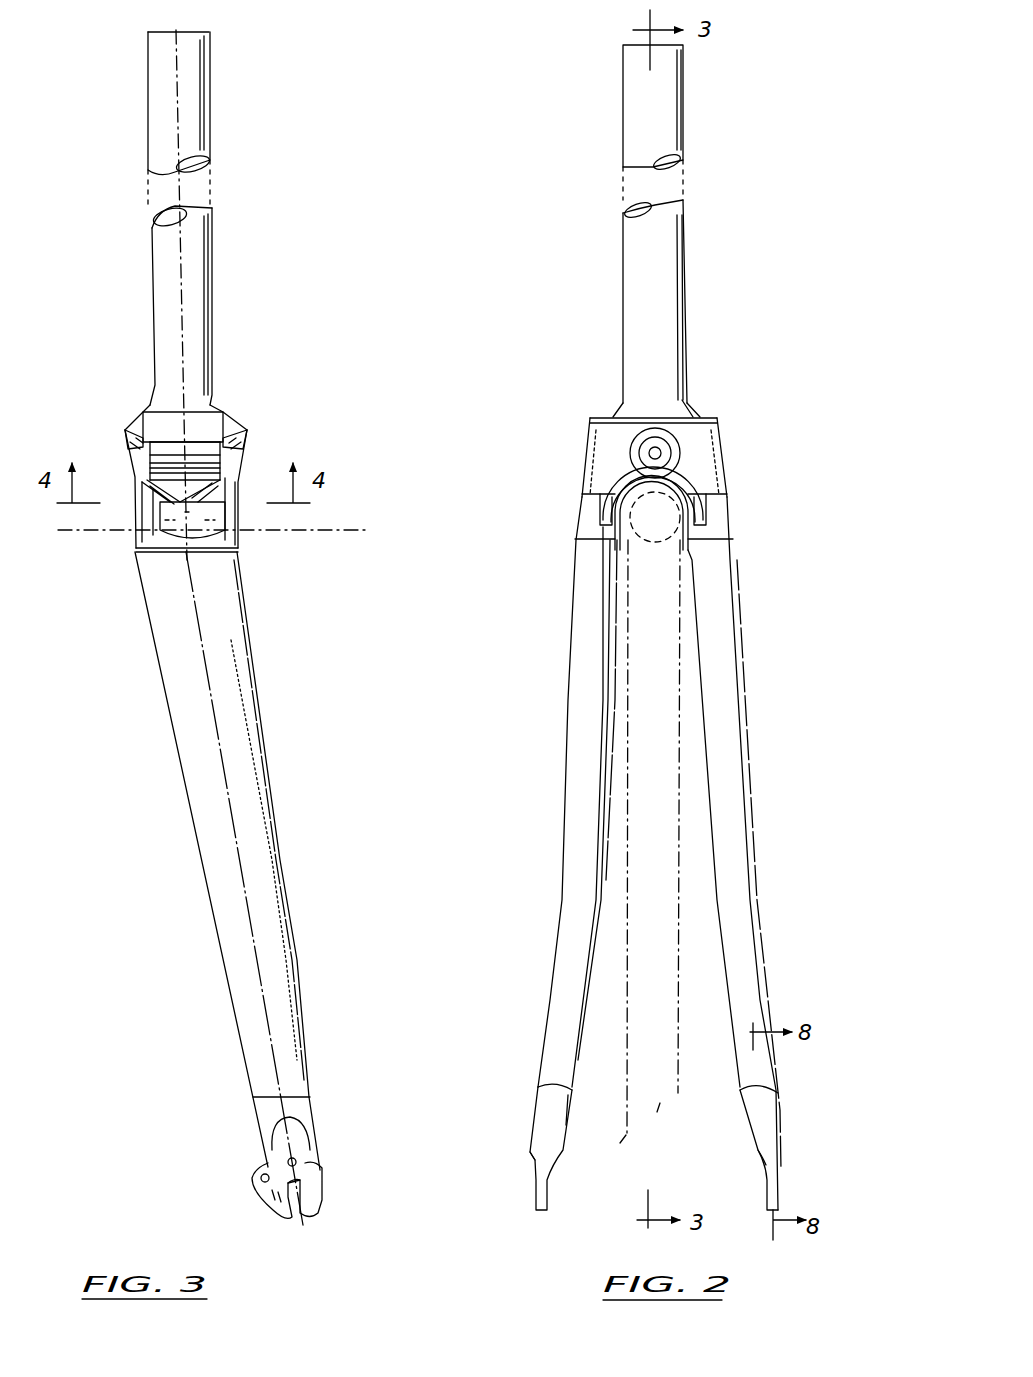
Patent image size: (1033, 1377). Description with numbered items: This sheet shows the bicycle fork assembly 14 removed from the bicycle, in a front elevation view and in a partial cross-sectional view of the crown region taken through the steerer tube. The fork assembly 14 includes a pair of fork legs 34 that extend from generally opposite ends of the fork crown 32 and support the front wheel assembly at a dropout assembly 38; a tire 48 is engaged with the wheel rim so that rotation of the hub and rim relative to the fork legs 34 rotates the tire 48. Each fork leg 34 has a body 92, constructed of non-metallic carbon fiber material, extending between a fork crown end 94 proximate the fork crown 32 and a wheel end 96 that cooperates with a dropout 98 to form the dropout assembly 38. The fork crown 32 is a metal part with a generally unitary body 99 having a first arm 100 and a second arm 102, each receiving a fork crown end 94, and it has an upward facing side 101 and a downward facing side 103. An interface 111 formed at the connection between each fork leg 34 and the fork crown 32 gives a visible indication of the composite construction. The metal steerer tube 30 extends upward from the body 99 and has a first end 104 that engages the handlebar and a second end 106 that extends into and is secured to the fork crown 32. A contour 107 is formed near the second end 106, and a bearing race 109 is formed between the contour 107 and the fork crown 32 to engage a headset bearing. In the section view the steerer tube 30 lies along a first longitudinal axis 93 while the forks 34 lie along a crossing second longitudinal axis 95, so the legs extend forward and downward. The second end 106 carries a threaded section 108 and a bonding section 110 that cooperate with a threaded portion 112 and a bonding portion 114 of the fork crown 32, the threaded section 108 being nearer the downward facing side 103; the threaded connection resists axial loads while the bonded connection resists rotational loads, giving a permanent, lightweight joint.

In FIG. 2, the fork assembly 14 is at (590, 365).
In FIG. 3, the steerer tube 30 is at (186, 282).
In FIG. 2, the steerer tube 30 is at (680, 139).
In FIG. 3, the fork crown 32 is at (221, 455).
In FIG. 2, the fork crown 32 is at (686, 431).
In FIG. 3, the fork leg 34 is at (247, 690).
In FIG. 2, the fork leg 34 is at (675, 853).
In FIG. 3, the dropout assembly 38 is at (346, 1117).
In FIG. 2, the dropout assembly 38 is at (530, 1103).
In FIG. 3, the tire 48 is at (340, 527).
In FIG. 2, the tire 48 is at (680, 500).
In FIG. 2, the body 92 is at (575, 772).
In FIG. 3, the first longitudinal axis 93 is at (176, 30).
In FIG. 2, the fork crown end 94 is at (788, 534).
In FIG. 3, the second longitudinal axis 95 is at (148, 345).
In FIG. 2, the wheel end 96 is at (814, 1078).
In FIG. 3, the dropout 98 is at (315, 1163).
In FIG. 2, the dropout 98 is at (540, 1140).
In FIG. 3, the body 99 is at (240, 441).
In FIG. 2, the body 99 is at (605, 435).
In FIG. 2, the first arm 100 is at (607, 350).
In FIG. 3, the upward facing side 101 is at (308, 419).
In FIG. 2, the upward facing side 101 is at (824, 352).
In FIG. 2, the second arm 102 is at (840, 327).
In FIG. 3, the downward facing side 103 is at (243, 496).
In FIG. 2, the downward facing side 103 is at (780, 553).
In FIG. 3, the first end 104 is at (238, 80).
In FIG. 2, the first end 104 is at (612, 68).
In FIG. 3, the second end 106 is at (246, 396).
In FIG. 2, the second end 106 is at (760, 307).
In FIG. 2, the contour 107 is at (694, 401).
In FIG. 3, the threaded section 108 is at (150, 406).
In FIG. 3, the bearing race 109 is at (232, 421).
In FIG. 2, the bearing race 109 is at (615, 413).
In FIG. 3, the bonding section 110 is at (200, 417).
In FIG. 2, the interface 111 is at (597, 516).
In FIG. 3, the threaded portion 112 is at (250, 456).
In FIG. 2, the threaded portion 112 is at (655, 453).
In FIG. 3, the bonding portion 114 is at (150, 418).